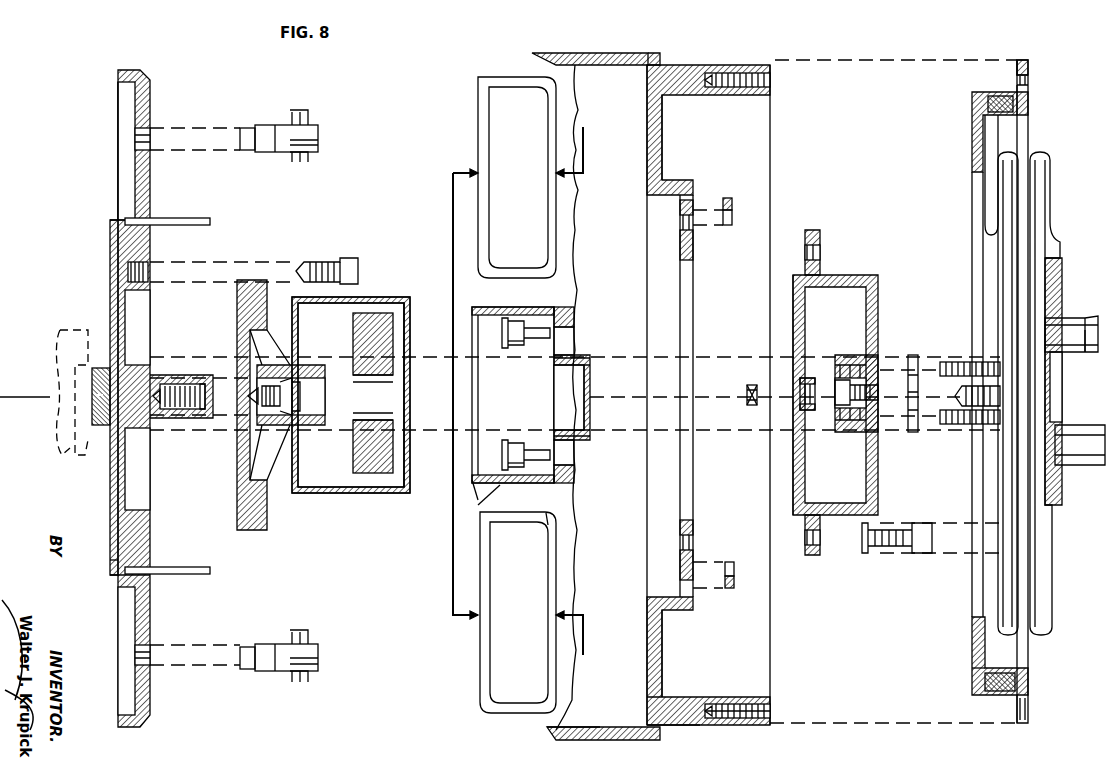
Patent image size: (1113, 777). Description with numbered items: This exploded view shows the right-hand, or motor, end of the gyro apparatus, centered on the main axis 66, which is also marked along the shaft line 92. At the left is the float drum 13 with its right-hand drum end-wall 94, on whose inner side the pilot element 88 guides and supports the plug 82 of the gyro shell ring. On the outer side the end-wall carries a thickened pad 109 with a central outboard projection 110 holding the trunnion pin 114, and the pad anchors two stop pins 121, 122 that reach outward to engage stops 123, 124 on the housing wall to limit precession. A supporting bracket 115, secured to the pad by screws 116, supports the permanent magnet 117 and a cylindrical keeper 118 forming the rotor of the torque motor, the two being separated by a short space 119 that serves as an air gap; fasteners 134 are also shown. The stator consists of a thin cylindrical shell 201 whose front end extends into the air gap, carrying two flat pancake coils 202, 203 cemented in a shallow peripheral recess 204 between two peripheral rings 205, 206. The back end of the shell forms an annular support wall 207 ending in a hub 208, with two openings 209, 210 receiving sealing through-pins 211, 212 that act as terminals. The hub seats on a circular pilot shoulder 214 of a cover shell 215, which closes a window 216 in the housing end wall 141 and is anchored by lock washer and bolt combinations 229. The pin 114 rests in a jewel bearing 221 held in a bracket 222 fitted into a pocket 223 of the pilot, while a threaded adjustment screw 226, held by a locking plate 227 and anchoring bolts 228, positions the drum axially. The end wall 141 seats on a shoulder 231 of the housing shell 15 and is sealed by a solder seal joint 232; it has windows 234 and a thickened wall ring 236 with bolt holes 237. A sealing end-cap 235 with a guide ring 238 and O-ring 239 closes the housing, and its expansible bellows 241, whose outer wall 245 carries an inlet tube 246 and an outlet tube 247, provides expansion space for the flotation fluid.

The float drum 13 is at (164, 78).
The right-hand drum end-wall 94 is at (135, 96).
The fastener 134 is at (278, 125).
The stop pin 121 is at (190, 218).
The screws 116 is at (345, 258).
The cylindrical keeper 118 is at (405, 291).
The space 119 is at (398, 314).
The permanent magnet 117 is at (393, 356).
The pin 114 is at (320, 400).
The supporting bracket 115 is at (267, 508).
The shaft 92 is at (31, 364).
The main axis 66 is at (53, 396).
The plug 82 is at (68, 458).
The pilot element 88 is at (100, 425).
The outboard projection 110 is at (165, 418).
The pad 109 is at (112, 556).
The stop pin 122 is at (190, 567).
The pan-cake coil 202 is at (480, 153).
The stator shell 201 is at (537, 418).
The annular support wall 207 is at (574, 319).
The opening 209 is at (574, 340).
The hub 208 is at (590, 359).
The sealing through-pin 211 is at (535, 337).
The sealing through-pin 212 is at (540, 457).
The opening 210 is at (574, 463).
The pan-cake coil 203 is at (527, 487).
The peripheral recess 204 is at (478, 505).
The peripheral ring 205 is at (470, 490).
The peripheral ring 206 is at (548, 524).
The housing shell 15 is at (606, 53).
The shoulder 231 is at (647, 77).
The housing right-hand end wall 141 is at (680, 72).
The stop bracket 123 is at (733, 207).
The window 216 is at (680, 494).
The window 234 is at (662, 663).
The solder seal joint 232 is at (600, 738).
The wall ring 236 is at (700, 726).
The bolt holes 237 is at (770, 710).
The cover shell 215 is at (846, 275).
The jewel bearing 221 is at (747, 394).
The bracket 222 is at (806, 378).
The pocket 223 is at (840, 398).
The circular pilot shoulder 214 is at (848, 432).
The stop bracket 124 is at (734, 584).
The locking plate 227 is at (914, 355).
The anchoring bolts 228 is at (945, 362).
The threaded adjustment screw 226 is at (962, 402).
The lock washer and bolt combinations 229 is at (878, 553).
The inlet tube 246 is at (1090, 318).
The outlet tube 247 is at (1088, 465).
The outer wall 245 is at (1062, 503).
The expansible bellows 241 is at (1042, 636).
The sealing end-cap 235 is at (972, 659).
The guide ring 238 is at (972, 689).
The O-ring 239 is at (992, 693).